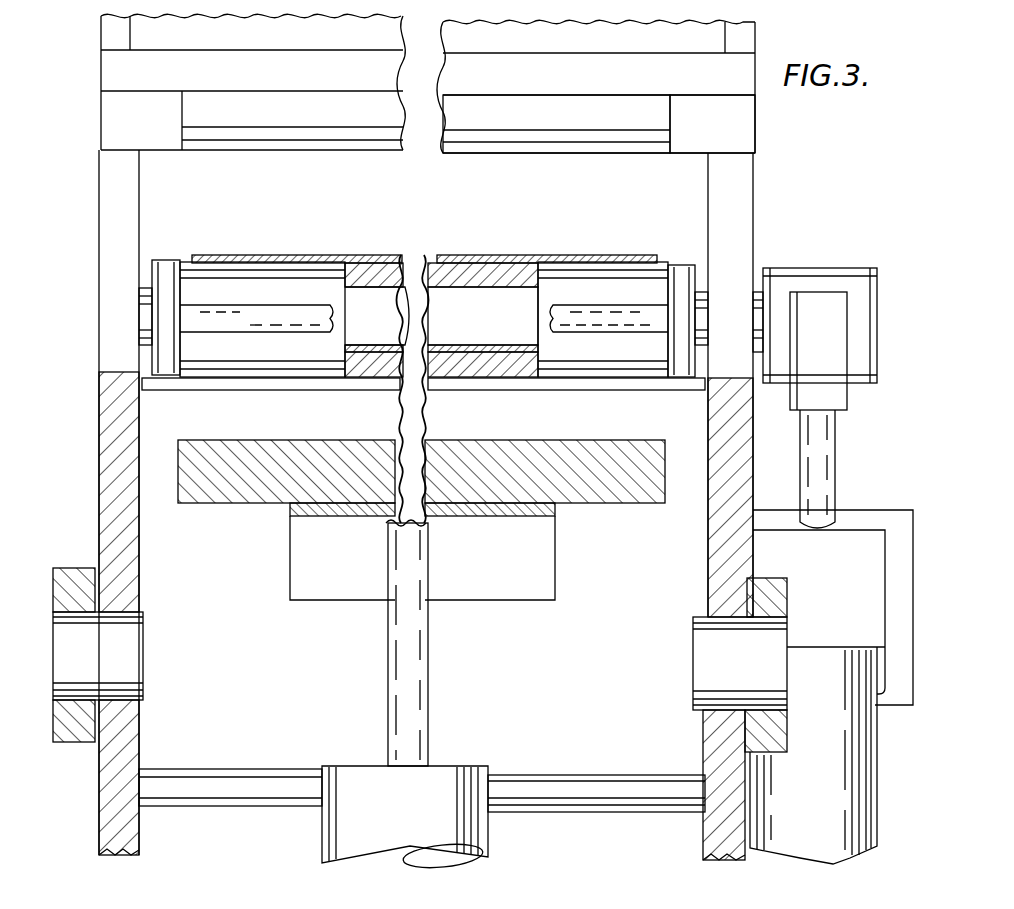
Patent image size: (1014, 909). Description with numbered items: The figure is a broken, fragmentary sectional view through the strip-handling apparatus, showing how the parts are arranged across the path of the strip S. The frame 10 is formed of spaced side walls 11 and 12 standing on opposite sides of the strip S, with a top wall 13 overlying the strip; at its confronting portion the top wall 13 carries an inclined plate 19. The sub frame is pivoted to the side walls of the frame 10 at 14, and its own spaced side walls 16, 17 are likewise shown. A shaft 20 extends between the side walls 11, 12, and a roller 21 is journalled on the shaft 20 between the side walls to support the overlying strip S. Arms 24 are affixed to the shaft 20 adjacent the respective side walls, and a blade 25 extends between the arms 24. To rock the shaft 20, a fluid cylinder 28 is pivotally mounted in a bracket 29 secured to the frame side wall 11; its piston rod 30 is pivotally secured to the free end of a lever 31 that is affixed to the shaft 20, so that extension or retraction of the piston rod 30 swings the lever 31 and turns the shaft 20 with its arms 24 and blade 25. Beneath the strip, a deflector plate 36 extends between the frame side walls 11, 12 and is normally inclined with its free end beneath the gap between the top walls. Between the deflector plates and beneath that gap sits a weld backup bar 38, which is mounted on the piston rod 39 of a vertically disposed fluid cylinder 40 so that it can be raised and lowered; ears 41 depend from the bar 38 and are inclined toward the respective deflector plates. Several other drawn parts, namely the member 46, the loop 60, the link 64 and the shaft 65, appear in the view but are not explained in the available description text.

The frame 10 is at (93, 391).
The side wall 11 is at (730, 464).
The side wall 12 is at (108, 455).
The top wall 13 is at (736, 122).
The pivot 14 is at (128, 650).
The side wall 16 is at (778, 734).
The side wall 17 is at (75, 735).
The inclined plate 19 is at (512, 116).
The shaft 20 is at (369, 303).
The roller 21 is at (527, 272).
The arm 24 is at (161, 272).
The blade 25 is at (255, 316).
The fluid cylinder 28 is at (830, 847).
The bracket 29 is at (900, 523).
The piston rod 30 is at (822, 430).
The lever 31 is at (827, 268).
The deflector plate 36 is at (572, 424).
The weld backup bar 38 is at (270, 448).
The piston rod 39 is at (400, 690).
The fluid cylinder 40 is at (336, 838).
The ear 41 is at (505, 590).
The top frame member 46 is at (328, 86).
The loop 60 is at (437, 875).
The link 64 is at (306, 908).
The shaft 65 is at (422, 839).
The strip S is at (510, 258).